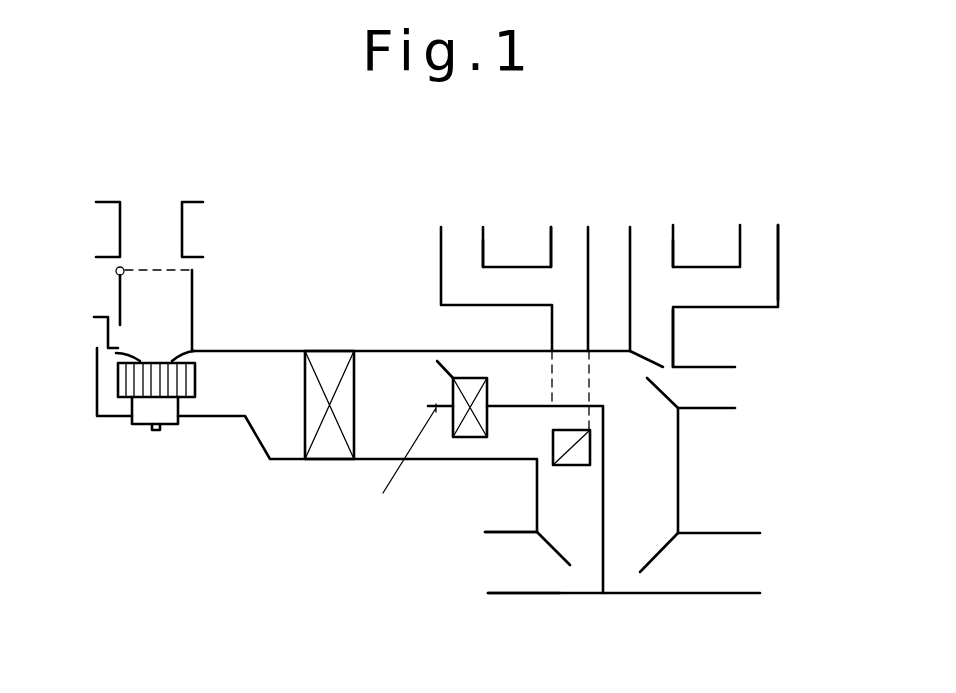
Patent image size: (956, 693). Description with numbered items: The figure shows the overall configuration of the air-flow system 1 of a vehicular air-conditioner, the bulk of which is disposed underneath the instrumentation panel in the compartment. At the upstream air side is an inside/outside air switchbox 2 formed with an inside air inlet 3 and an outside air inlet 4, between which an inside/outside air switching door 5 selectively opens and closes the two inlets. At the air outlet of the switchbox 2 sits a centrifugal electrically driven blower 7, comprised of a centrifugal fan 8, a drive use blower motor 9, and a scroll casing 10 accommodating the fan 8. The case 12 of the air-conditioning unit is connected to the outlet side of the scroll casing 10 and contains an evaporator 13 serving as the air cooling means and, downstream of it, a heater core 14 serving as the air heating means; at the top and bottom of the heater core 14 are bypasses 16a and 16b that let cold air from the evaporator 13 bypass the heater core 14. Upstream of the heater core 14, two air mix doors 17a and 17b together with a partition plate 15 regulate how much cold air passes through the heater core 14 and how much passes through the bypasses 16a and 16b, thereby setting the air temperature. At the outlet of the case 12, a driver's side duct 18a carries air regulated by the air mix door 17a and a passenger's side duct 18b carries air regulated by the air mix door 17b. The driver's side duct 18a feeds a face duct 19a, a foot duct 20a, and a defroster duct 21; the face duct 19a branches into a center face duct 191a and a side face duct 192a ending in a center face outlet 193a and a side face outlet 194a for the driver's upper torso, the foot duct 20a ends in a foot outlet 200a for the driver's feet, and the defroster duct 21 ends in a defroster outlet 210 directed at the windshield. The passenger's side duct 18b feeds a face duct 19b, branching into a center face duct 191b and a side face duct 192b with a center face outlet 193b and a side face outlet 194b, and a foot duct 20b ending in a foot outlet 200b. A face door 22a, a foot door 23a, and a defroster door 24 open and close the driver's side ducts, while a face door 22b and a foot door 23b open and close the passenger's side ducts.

The air-flow system 1 is at (178, 527).
The inside/outside air switchbox 2 is at (98, 230).
The inside air inlet 3 is at (107, 258).
The outside air inlet 4 is at (121, 231).
The inside/outside air switching door 5 is at (118, 303).
The blower 7 is at (91, 434).
The centrifugal fan 8 is at (120, 378).
The blower motor 9 is at (168, 419).
The scroll casing 10 is at (113, 426).
The case 12 is at (377, 460).
The evaporator 13 is at (328, 452).
The heater core 14 is at (437, 368).
The partition plate 15 is at (397, 466).
The bypass 16a is at (467, 357).
The bypass 16b is at (471, 450).
The air mix door 17a is at (450, 395).
The air mix door 17b is at (447, 445).
The driver's side duct 18a is at (534, 350).
The passenger's side duct 18b is at (493, 460).
The face duct 19a is at (675, 325).
The face duct 19b is at (590, 283).
The center face duct 191a is at (677, 253).
The center face duct 191b is at (550, 237).
The side face duct 192a is at (780, 238).
The side face duct 192b is at (434, 234).
The center face outlet 193a is at (652, 232).
The center face outlet 193b is at (568, 235).
The side face outlet 194a is at (760, 235).
The side face outlet 194b is at (467, 240).
The foot duct 20a is at (723, 532).
The foot duct 20b is at (503, 597).
The foot outlet 200a is at (743, 575).
The foot outlet 200b is at (487, 560).
The defroster duct 21 is at (720, 412).
The defroster outlet 210 is at (717, 388).
The face door 22a is at (647, 365).
The face door 22b is at (583, 457).
The foot door 23a is at (658, 555).
The foot door 23b is at (557, 555).
The defroster door 24 is at (663, 388).